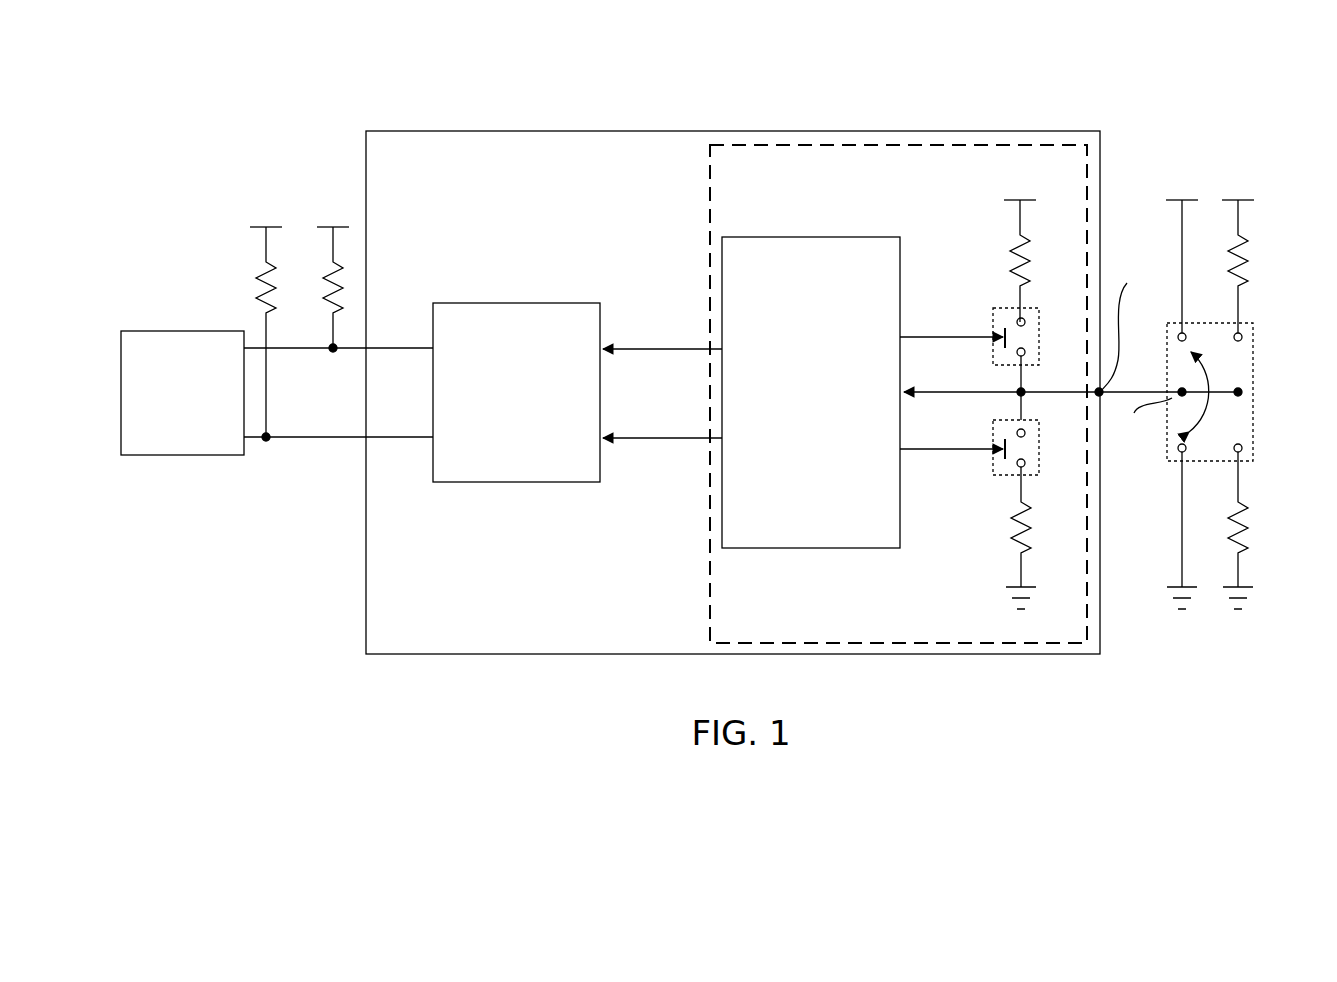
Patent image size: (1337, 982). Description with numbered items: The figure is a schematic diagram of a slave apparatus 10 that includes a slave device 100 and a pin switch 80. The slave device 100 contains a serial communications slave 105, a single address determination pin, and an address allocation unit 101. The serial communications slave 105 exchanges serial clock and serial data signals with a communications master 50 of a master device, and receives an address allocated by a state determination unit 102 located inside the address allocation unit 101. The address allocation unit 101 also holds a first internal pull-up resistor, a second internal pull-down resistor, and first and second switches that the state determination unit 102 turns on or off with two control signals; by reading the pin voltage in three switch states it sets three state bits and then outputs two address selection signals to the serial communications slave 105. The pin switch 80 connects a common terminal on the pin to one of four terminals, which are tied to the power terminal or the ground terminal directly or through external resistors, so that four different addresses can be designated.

The slave apparatus 10 is at (537, 70).
The communications master 50 is at (182, 331).
The slave device 100 is at (731, 131).
The address allocation unit 101 is at (710, 206).
The state determination unit 102 is at (810, 237).
The serial communications slave 105 is at (516, 303).
The pin switch 80 is at (1254, 378).